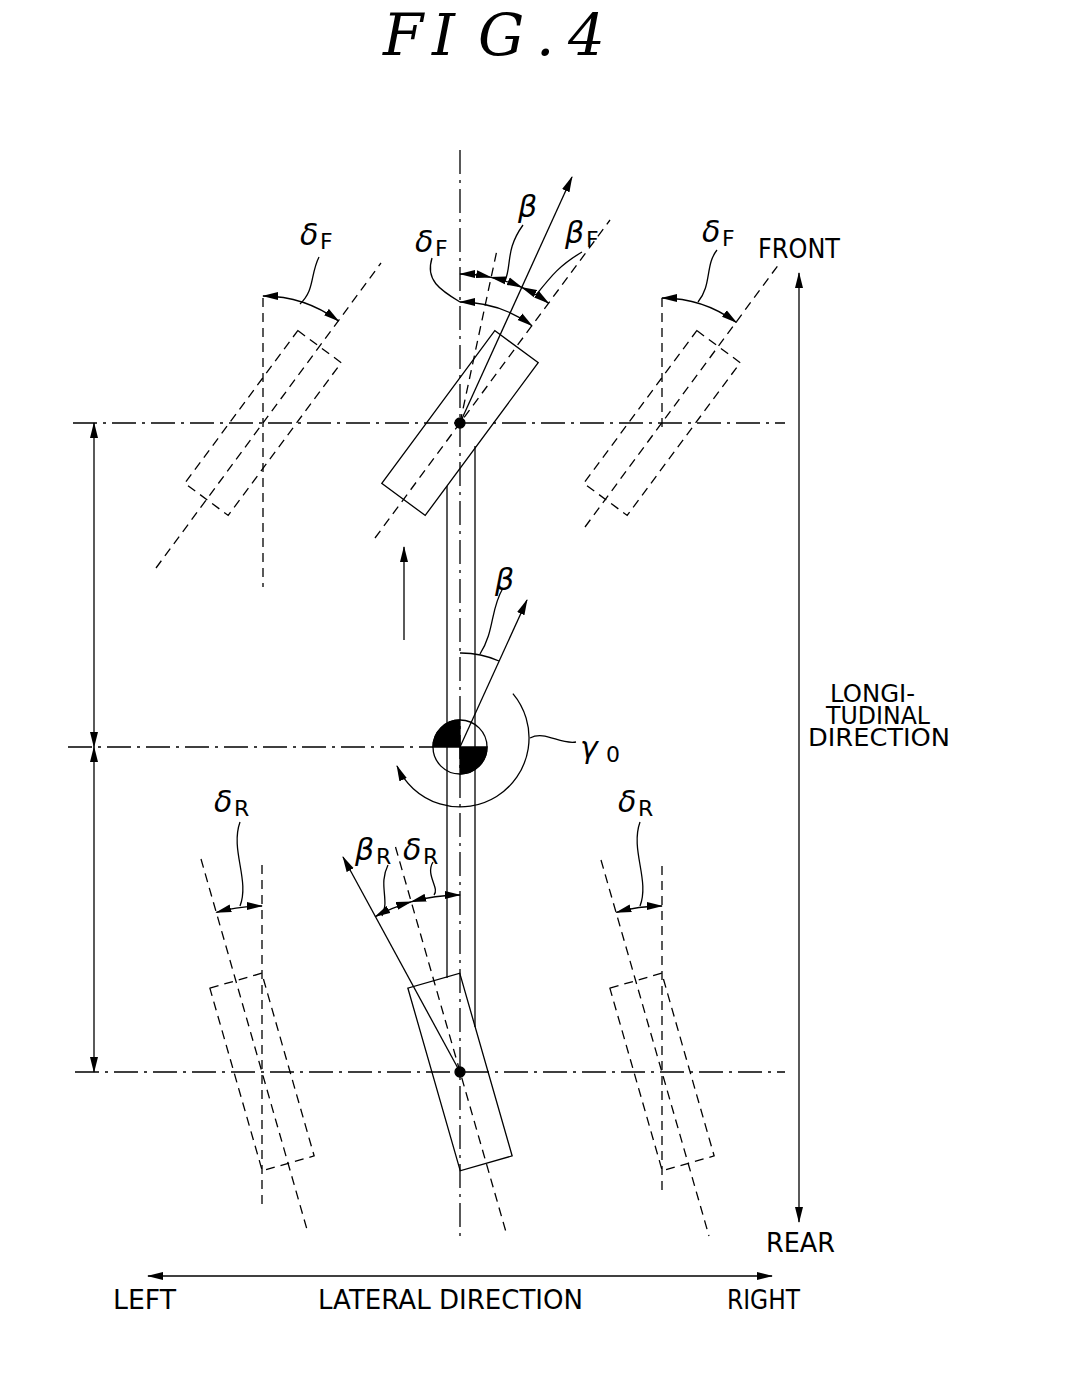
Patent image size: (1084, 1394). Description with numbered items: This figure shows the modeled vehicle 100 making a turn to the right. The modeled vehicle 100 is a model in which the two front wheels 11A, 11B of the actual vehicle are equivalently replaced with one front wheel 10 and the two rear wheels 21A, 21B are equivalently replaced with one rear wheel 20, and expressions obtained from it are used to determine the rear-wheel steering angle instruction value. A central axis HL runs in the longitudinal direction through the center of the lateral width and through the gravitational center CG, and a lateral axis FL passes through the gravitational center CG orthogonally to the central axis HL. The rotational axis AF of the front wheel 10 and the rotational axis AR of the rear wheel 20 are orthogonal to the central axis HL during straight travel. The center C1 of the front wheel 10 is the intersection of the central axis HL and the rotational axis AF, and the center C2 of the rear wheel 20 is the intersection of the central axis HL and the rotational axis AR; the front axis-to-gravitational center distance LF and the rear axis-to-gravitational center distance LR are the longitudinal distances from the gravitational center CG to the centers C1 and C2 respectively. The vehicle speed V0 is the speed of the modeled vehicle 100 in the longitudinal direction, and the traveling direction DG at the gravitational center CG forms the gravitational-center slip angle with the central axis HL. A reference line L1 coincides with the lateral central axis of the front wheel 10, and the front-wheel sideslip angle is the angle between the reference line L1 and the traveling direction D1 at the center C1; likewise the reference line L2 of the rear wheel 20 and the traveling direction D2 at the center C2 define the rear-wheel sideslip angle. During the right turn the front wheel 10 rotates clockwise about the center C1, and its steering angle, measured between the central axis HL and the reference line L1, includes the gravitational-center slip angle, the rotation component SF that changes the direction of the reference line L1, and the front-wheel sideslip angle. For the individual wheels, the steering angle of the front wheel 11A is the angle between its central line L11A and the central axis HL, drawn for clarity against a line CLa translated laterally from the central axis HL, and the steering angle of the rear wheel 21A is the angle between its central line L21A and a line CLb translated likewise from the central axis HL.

The modeled vehicle 100 is at (432, 1212).
The front wheel 10 is at (383, 478).
The rear wheel 20 is at (512, 1152).
The front wheel 11A is at (192, 488).
The front wheel 11B is at (650, 485).
The rear wheel 21A is at (307, 1130).
The rear wheel 21B is at (706, 1128).
The center of the front wheel C1 is at (463, 426).
The center of the rear wheel C2 is at (463, 1074).
The gravitational center CG is at (428, 742).
The traveling direction DG is at (509, 640).
The central axis HL is at (462, 167).
The traveling direction D1 is at (558, 208).
The traveling direction D2 is at (356, 887).
The reference line L1 is at (562, 285).
The reference line L2 is at (503, 1220).
The central line L11A is at (180, 533).
The central line L21A is at (300, 1182).
The line CLa is at (263, 356).
The line CLb is at (263, 864).
The rotational axis AF is at (142, 423).
The rotational axis AR is at (135, 1074).
The lateral axis FL is at (153, 745).
The vehicle speed V0 is at (404, 585).
The rotation component SF is at (475, 273).
The front axis-to-gravitational center distance LF is at (72, 585).
The rear axis-to-gravitational center distance LR is at (72, 909).